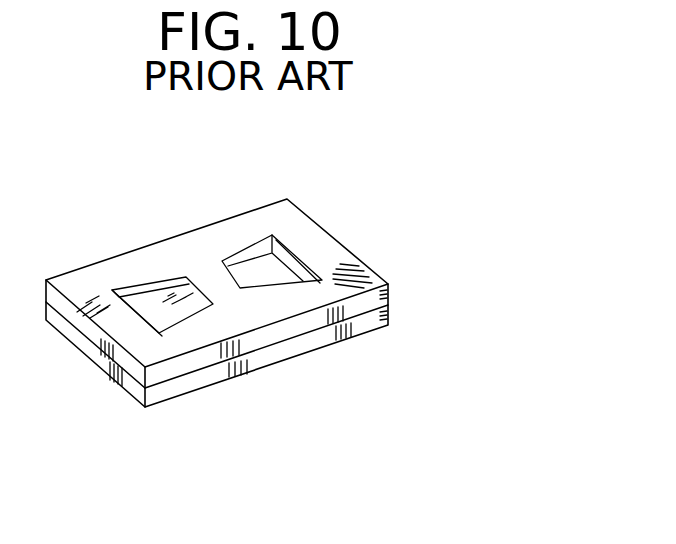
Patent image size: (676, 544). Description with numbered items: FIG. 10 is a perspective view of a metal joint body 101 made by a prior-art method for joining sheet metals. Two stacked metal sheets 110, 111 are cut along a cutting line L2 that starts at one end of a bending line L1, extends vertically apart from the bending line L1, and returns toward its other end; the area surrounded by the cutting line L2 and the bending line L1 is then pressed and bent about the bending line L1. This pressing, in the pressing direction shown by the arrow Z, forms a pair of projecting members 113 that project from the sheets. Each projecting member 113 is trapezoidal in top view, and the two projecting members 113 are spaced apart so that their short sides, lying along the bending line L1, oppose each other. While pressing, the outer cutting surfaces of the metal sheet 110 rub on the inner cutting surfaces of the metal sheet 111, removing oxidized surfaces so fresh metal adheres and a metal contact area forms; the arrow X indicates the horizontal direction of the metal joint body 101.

The metal joint body 101 is at (279, 295).
The metal sheet 110 is at (388, 293).
The metal sheet 111 is at (387, 318).
The projecting member 113 is at (252, 264).
The bending line L1 is at (203, 288).
The cutting line L2 is at (141, 288).
The arrow X is at (333, 423).
The arrow Z is at (469, 290).